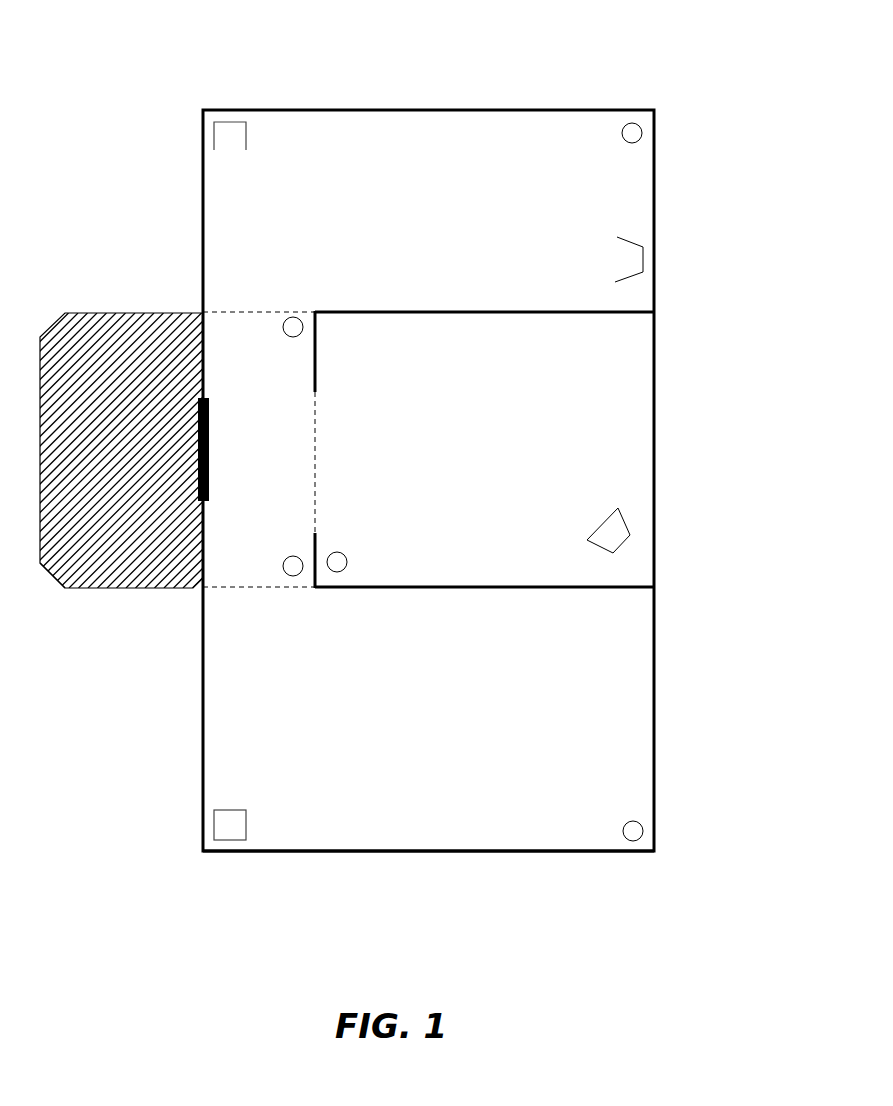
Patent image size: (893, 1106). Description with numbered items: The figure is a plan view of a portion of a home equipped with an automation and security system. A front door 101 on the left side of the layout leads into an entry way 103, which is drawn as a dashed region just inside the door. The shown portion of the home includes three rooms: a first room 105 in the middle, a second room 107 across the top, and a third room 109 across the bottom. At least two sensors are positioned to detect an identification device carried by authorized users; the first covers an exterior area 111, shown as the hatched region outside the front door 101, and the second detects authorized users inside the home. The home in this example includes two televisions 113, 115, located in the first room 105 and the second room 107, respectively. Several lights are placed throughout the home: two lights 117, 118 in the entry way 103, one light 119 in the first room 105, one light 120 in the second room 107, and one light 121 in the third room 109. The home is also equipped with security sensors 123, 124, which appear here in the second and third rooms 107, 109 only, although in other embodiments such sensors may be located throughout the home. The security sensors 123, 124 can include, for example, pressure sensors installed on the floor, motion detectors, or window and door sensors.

The front door 101 is at (196, 447).
The entry way 103 is at (268, 417).
The first room 105 is at (615, 455).
The second room 107 is at (425, 153).
The third room 109 is at (447, 800).
The exterior area 111 is at (122, 563).
The television 113 is at (617, 533).
The television 115 is at (643, 247).
The light 117 is at (293, 566).
The light 118 is at (293, 327).
The light 119 is at (337, 562).
The light 120 is at (632, 133).
The light 121 is at (633, 831).
The security sensor 123 is at (225, 131).
The security sensor 124 is at (223, 825).